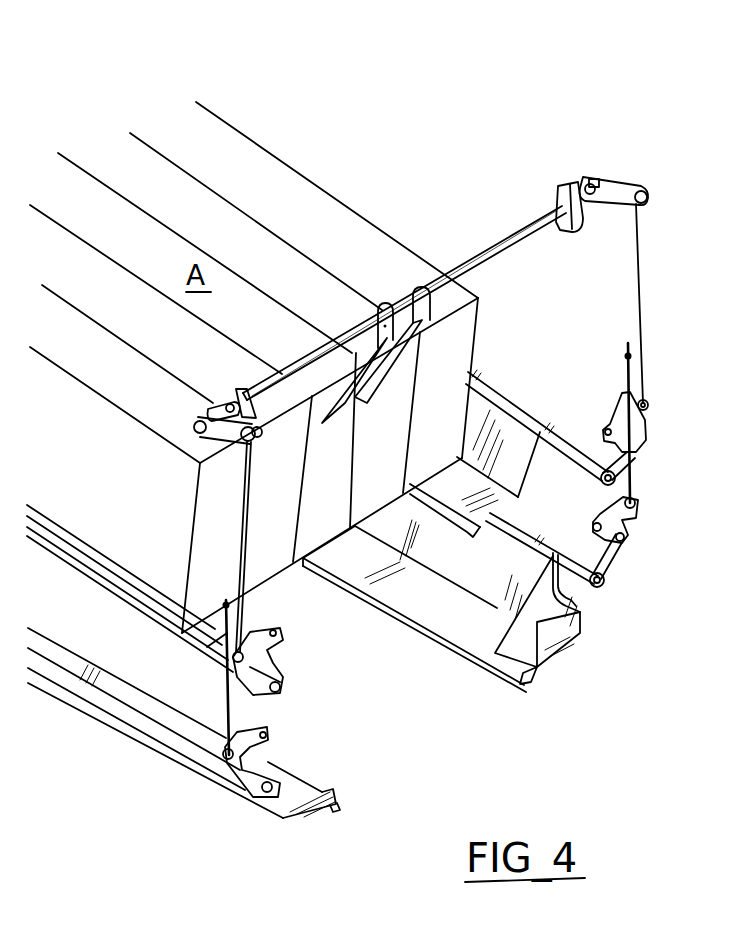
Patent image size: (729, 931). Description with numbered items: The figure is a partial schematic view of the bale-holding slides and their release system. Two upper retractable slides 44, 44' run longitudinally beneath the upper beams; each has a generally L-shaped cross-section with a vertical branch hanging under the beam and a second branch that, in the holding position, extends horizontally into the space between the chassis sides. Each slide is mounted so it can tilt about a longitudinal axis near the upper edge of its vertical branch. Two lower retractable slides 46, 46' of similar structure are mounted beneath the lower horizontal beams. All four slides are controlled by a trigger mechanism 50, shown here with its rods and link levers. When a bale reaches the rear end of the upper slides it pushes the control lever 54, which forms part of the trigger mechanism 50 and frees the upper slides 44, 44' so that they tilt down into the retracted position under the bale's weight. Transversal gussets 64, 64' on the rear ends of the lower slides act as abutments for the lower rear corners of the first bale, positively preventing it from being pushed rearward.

The retractable slide 44 is at (509, 437).
The retractable slide 44' is at (192, 600).
The retractable slide 46 is at (450, 602).
The retractable slide 46' is at (210, 723).
The trigger mechanism 50 is at (652, 455).
The control lever 54 is at (412, 360).
The transversal gusset 64 is at (485, 618).
The transversal gusset 64' is at (287, 750).